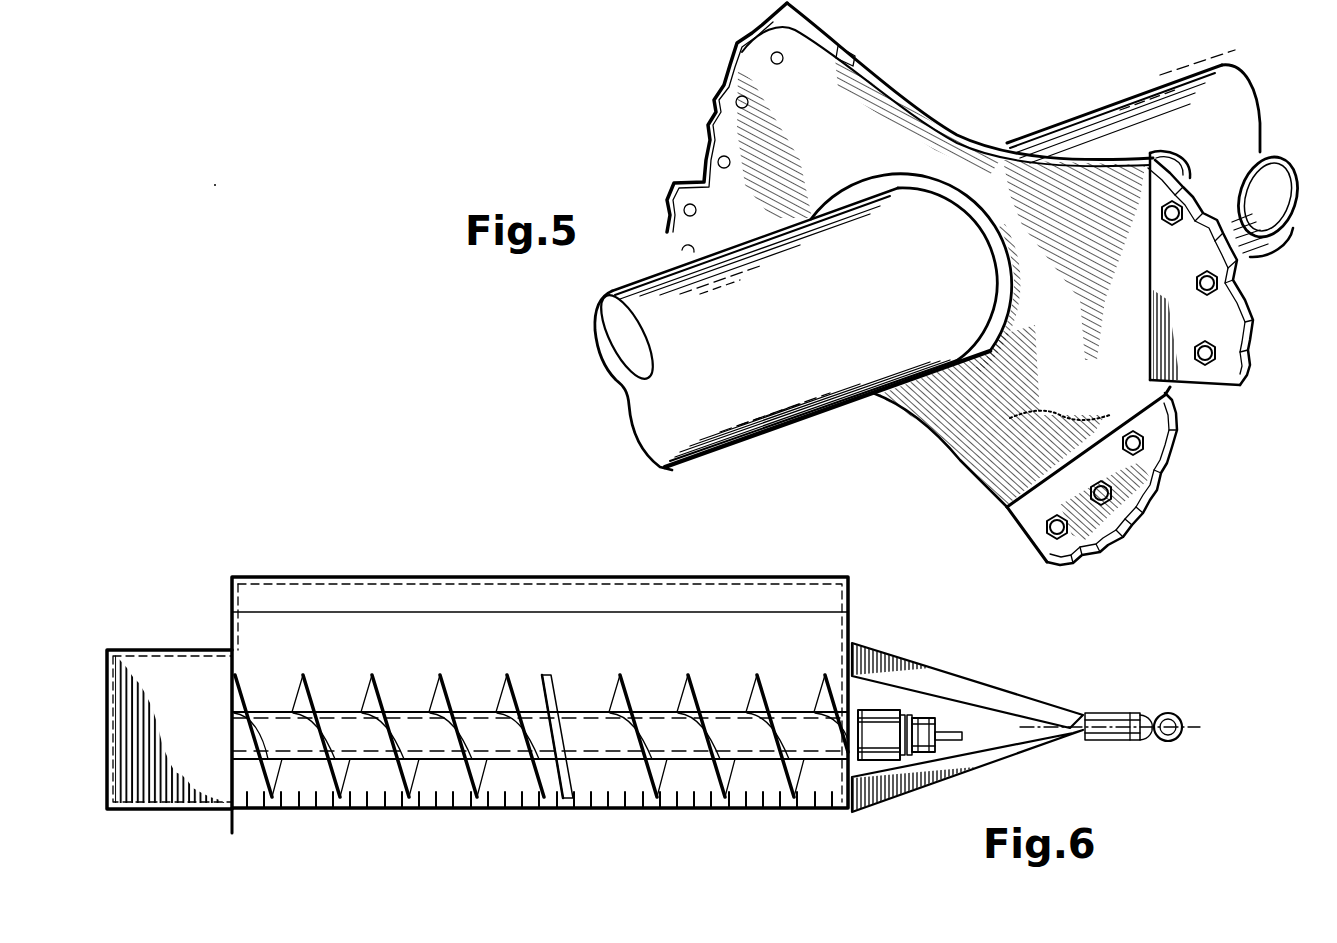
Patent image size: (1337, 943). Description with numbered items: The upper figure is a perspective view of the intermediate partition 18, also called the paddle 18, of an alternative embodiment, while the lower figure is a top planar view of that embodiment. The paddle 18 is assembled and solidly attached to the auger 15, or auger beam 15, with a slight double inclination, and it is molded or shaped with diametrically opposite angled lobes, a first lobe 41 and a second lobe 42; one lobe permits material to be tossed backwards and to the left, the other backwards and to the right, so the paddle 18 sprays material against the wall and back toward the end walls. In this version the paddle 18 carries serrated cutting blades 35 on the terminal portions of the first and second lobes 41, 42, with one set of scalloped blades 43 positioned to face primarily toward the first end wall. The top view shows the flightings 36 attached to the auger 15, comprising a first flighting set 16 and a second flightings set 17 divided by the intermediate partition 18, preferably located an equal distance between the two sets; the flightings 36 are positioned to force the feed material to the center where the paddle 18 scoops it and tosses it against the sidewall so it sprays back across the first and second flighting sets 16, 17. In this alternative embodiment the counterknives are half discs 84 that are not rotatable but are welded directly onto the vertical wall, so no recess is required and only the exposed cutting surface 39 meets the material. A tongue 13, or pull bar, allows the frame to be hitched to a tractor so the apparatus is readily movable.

In FIG. 6, the tongue 13 is at (1058, 693).
In FIG. 5, the auger 15 is at (1160, 87).
In FIG. 6, the first flighting set 16 is at (688, 675).
In FIG. 6, the second flightings set 17 is at (373, 675).
In FIG. 5, the intermediate partition 18 is at (830, 103).
In FIG. 6, the intermediate partition 18 is at (555, 680).
In FIG. 5, the cutting blades 35 is at (740, 43).
In FIG. 6, the flightings 36 is at (540, 666).
In FIG. 6, the cutting surface 39 is at (267, 800).
In FIG. 5, the first lobe 41 is at (1015, 409).
In FIG. 5, the second lobe 42 is at (806, 90).
In FIG. 5, the first set of scalloped blades 43 is at (1250, 350).
In FIG. 6, the half discs 84 is at (450, 810).